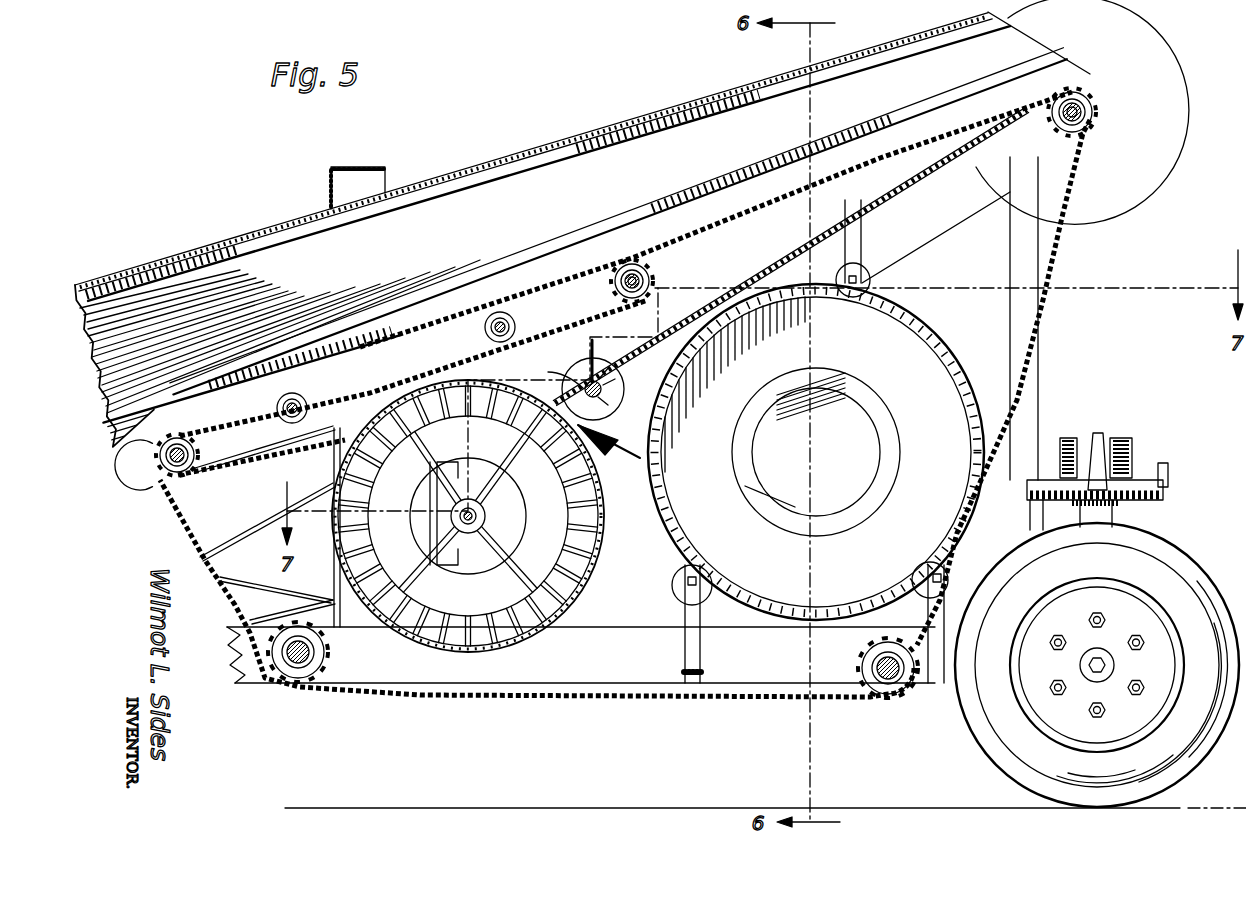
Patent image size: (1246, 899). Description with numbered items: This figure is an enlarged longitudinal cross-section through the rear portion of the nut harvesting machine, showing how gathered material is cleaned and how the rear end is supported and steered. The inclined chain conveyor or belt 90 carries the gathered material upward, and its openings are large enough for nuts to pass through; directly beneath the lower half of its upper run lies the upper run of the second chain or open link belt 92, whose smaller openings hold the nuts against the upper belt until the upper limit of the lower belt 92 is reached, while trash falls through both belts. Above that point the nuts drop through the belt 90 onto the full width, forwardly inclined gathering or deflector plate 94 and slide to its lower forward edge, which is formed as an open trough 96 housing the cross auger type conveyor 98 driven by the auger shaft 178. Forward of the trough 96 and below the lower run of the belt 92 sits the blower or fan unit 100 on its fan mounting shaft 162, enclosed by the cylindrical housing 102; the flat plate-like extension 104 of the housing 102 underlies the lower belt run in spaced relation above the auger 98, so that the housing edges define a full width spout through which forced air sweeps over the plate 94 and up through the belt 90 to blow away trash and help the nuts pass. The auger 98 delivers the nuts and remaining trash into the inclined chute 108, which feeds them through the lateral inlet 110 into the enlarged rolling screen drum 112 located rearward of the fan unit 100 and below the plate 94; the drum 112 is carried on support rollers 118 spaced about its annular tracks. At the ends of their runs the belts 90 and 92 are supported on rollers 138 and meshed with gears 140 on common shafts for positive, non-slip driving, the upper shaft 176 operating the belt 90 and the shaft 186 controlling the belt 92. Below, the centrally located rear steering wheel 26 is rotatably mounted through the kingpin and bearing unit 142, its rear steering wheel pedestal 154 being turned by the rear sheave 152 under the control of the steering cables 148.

The rear steering wheel 26 is at (977, 723).
The chain conveyor or belt 90 is at (445, 322).
The second chain or open link belt 92 is at (398, 356).
The gathering or deflector plate 94 is at (880, 195).
The open trough 96 is at (628, 395).
The cross auger type conveyor 98 is at (588, 380).
The blower or fan unit 100 is at (593, 545).
The cylindrical housing 102 is at (605, 508).
The flat plate-like extension 104 is at (515, 330).
The inclined chute 108 is at (637, 433).
The lateral inlet 110 is at (872, 445).
The rolling screen drum 112 is at (960, 356).
The support rollers 118 is at (866, 272).
The rollers 138 is at (1096, 117).
The gears 140 is at (1067, 143).
The kingpin and bearing unit 142 is at (1098, 434).
The steering cables 148 is at (1162, 490).
The rear sheave 152 is at (1148, 482).
The rear steering wheel pedestal 154 is at (1117, 515).
The fan mounting shaft 162 is at (485, 516).
The upper shaft 176 is at (1080, 105).
The auger shaft 178 is at (547, 372).
The shaft 186 is at (654, 277).